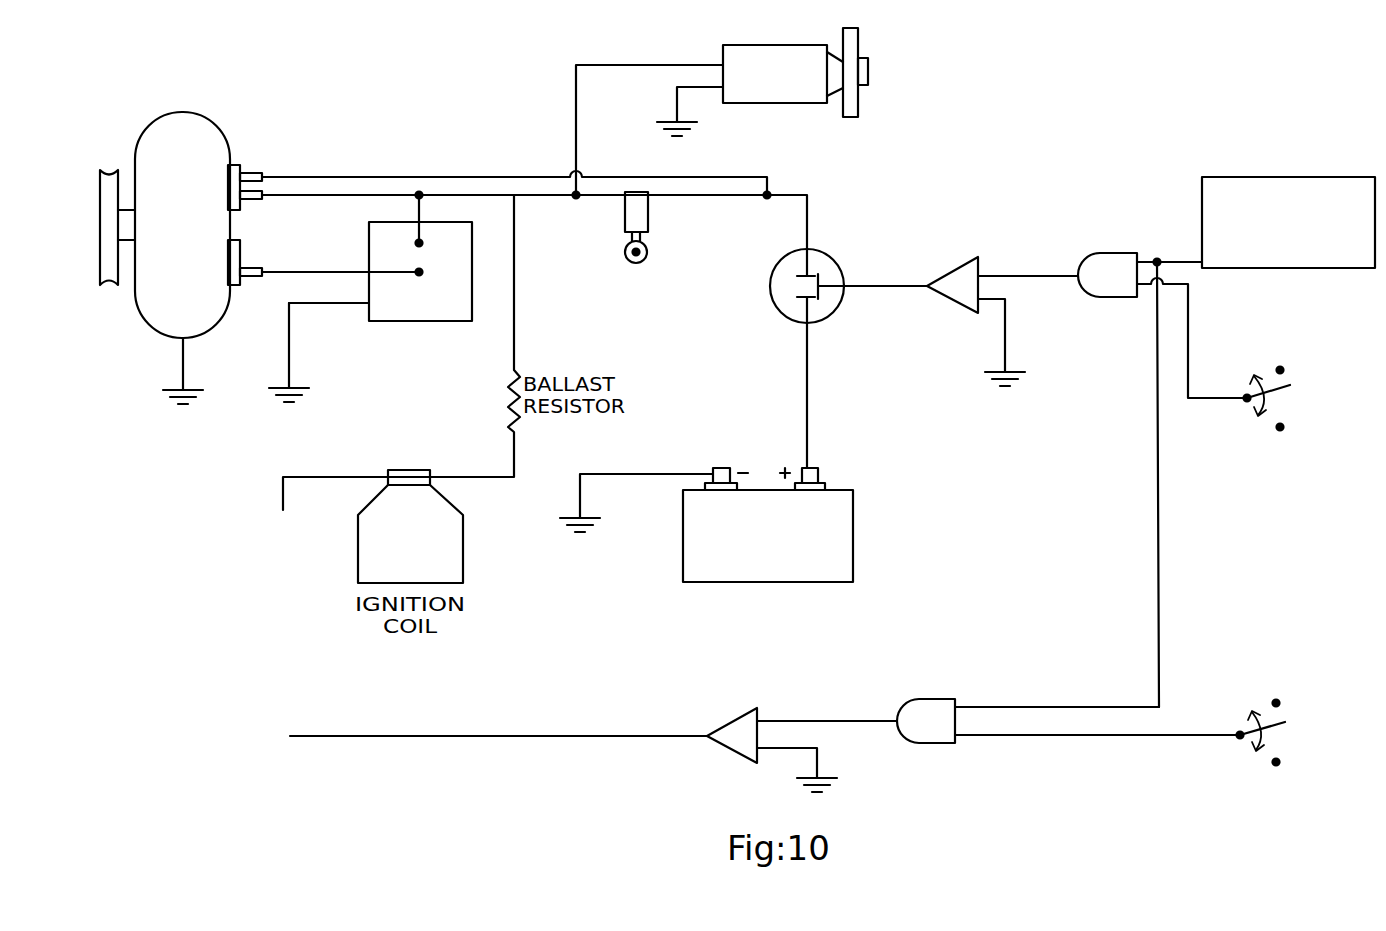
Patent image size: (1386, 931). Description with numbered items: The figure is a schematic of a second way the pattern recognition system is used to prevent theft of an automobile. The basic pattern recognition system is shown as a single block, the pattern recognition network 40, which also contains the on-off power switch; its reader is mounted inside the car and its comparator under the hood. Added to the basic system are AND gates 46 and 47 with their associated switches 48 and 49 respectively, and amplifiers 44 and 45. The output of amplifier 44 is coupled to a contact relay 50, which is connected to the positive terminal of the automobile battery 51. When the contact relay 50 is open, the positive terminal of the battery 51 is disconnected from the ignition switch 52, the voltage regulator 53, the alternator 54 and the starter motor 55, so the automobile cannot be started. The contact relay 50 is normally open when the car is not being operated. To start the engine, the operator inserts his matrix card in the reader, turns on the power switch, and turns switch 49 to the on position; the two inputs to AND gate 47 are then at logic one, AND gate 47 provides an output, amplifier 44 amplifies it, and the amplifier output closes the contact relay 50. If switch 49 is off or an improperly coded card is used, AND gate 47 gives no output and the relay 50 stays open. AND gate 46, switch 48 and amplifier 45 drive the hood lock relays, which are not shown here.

The pattern recognition network 40 is at (1252, 168).
The amplifier 44 is at (953, 278).
The amplifier 45 is at (742, 727).
The AND gate 46 is at (943, 712).
The AND gate 47 is at (1100, 262).
The switch 48 is at (1292, 731).
The switch 49 is at (1300, 400).
The contact relay 50 is at (838, 312).
The automobile battery 51 is at (848, 556).
The ignition switch 52 is at (648, 226).
The voltage regulator 53 is at (462, 240).
The alternator 54 is at (214, 146).
The starter motor 55 is at (743, 54).